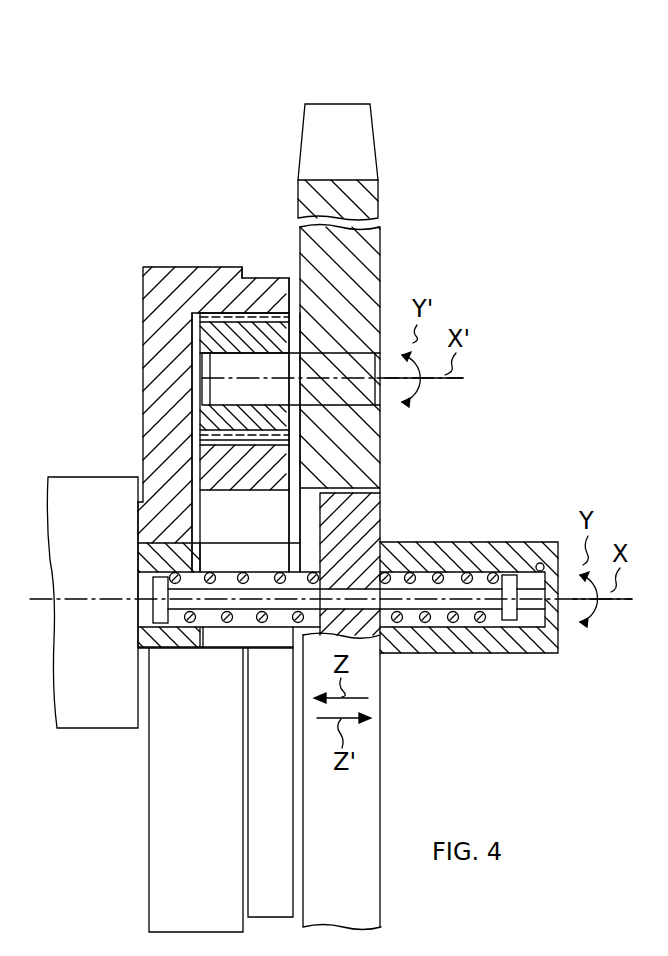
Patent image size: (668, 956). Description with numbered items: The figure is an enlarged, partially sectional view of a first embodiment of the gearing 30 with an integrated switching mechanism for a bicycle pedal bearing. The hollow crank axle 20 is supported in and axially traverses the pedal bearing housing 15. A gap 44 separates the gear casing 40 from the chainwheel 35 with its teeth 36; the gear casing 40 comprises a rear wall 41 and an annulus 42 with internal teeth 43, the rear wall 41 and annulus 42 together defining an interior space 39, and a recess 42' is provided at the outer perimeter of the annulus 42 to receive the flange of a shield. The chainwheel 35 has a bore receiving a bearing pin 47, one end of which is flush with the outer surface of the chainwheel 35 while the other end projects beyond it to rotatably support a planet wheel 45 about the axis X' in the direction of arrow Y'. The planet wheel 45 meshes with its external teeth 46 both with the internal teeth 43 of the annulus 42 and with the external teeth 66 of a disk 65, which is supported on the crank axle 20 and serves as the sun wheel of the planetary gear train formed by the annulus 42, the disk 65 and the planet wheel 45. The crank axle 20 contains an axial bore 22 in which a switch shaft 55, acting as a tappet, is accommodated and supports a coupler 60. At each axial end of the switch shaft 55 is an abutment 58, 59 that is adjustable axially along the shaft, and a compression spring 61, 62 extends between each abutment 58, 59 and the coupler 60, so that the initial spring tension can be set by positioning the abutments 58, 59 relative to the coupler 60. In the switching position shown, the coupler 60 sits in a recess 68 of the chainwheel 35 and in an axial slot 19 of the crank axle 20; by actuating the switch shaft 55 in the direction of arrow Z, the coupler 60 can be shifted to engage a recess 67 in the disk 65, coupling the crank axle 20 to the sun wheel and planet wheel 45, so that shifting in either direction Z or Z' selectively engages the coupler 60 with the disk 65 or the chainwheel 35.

The pedal bearing housing 15 is at (87, 717).
The axial slot 19 is at (217, 640).
The crank axle 20 is at (506, 538).
The axial bore 22 is at (540, 562).
The gearing 30 is at (474, 292).
The chainwheel 35 is at (383, 252).
The teeth 36 is at (360, 138).
The interior space 39 is at (195, 520).
The gear casing 40 is at (181, 378).
The rear wall 41 is at (153, 459).
The annulus 42 is at (214, 298).
The recess 42' is at (240, 240).
The internal teeth 43 is at (190, 325).
The gap 44 is at (292, 287).
The planet wheel 45 is at (205, 350).
The external teeth 46 is at (205, 436).
The bearing pin 47 is at (223, 390).
The switch shaft 55 is at (535, 612).
The abutment 58 is at (508, 612).
The abutment 59 is at (163, 650).
The coupler 60 is at (365, 517).
The compression spring 61 is at (434, 622).
The compression spring 62 is at (265, 642).
The disk 65 is at (275, 465).
The external teeth 66 is at (244, 440).
The recess 67 is at (257, 528).
The recess 68 is at (311, 500).